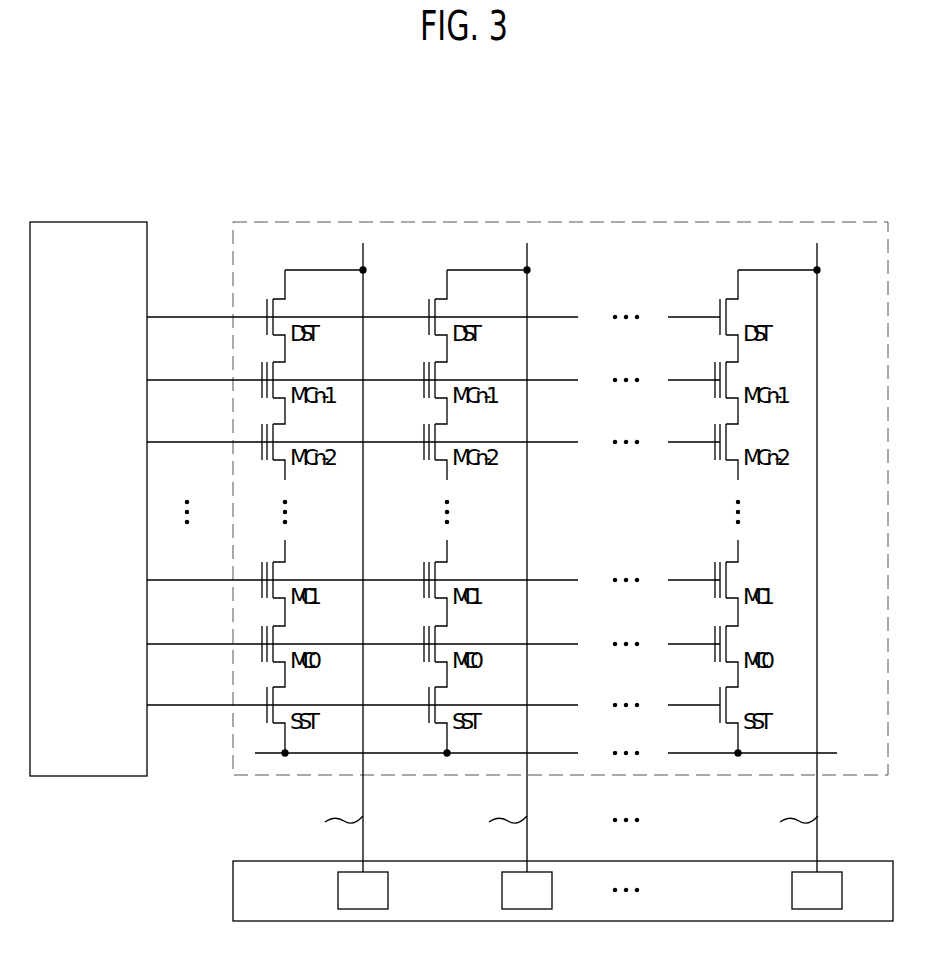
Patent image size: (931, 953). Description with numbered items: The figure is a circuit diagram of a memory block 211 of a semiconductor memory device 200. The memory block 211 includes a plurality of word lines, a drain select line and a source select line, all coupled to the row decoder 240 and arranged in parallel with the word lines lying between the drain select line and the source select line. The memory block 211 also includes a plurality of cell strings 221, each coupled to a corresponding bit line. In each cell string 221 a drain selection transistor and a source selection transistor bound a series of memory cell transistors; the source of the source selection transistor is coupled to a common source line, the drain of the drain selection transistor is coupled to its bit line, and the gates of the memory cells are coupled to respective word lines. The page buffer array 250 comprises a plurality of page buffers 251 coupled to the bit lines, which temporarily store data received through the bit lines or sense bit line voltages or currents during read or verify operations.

The memory device 200 is at (862, 126).
The memory block 211 is at (517, 468).
The cell string 221 is at (277, 259).
The row decoder 240 is at (90, 222).
The page buffer array 250 is at (529, 891).
The page buffer 251 is at (336, 889).